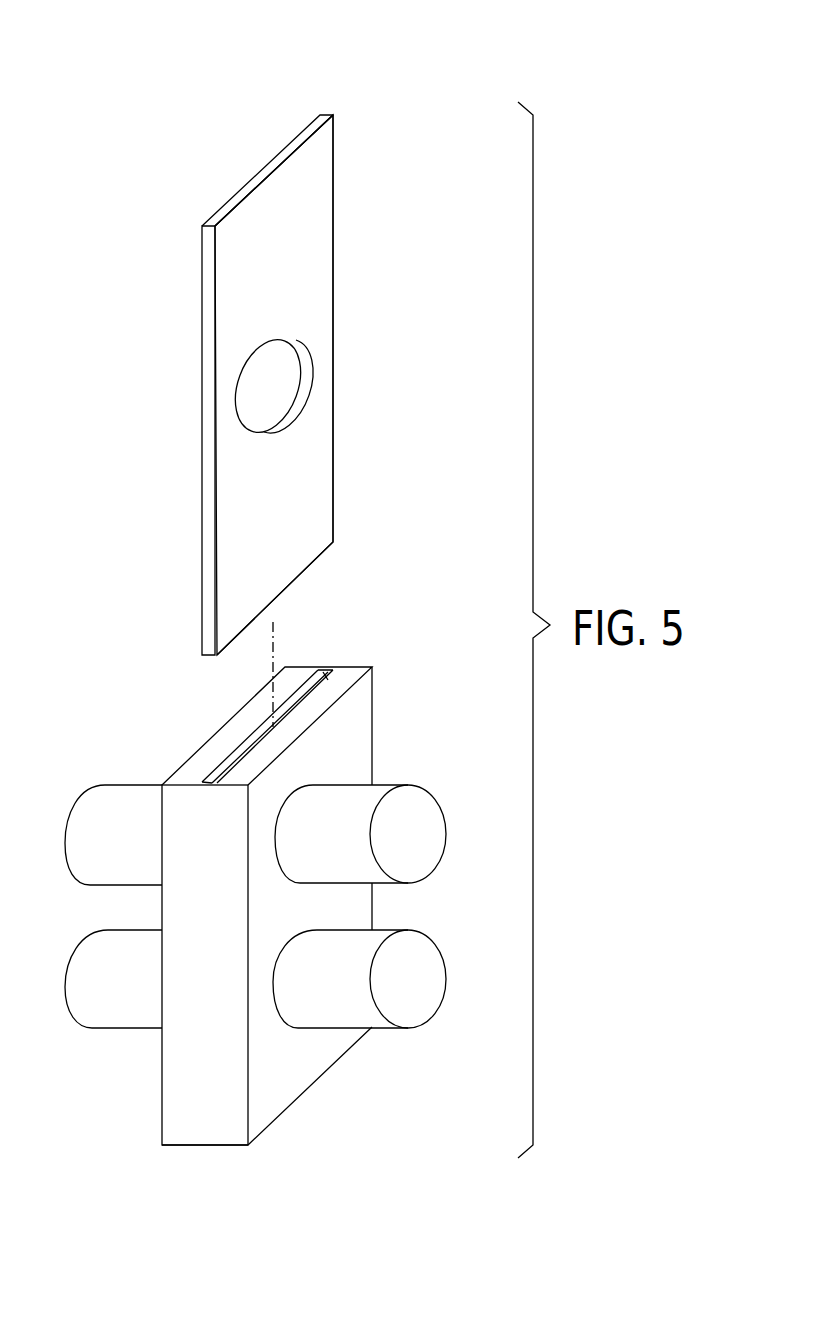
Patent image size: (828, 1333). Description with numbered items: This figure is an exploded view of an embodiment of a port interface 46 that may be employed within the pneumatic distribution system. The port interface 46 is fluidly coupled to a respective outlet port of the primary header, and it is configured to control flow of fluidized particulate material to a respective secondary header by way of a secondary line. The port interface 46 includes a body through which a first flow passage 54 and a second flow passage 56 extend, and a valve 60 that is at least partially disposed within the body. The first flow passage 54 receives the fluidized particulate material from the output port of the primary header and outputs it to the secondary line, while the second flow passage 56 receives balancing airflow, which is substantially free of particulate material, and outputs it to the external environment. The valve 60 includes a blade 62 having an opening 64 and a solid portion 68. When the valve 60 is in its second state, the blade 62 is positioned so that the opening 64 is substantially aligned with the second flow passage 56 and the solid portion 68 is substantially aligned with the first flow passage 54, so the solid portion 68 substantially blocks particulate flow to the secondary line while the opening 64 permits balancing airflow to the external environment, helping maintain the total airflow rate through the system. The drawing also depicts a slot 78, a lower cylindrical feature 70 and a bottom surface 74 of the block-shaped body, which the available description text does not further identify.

The valve 60 is at (370, 118).
The blade 62 is at (265, 172).
The solid portion 68 is at (265, 255).
The opening 64 is at (242, 370).
The port interface 46 is at (403, 653).
The slot 78 is at (240, 745).
The first flow passage 54 is at (327, 1030).
The second flow passage 56 is at (395, 785).
The lower pin 70 is at (432, 1008).
The bottom surface 74 is at (205, 1147).